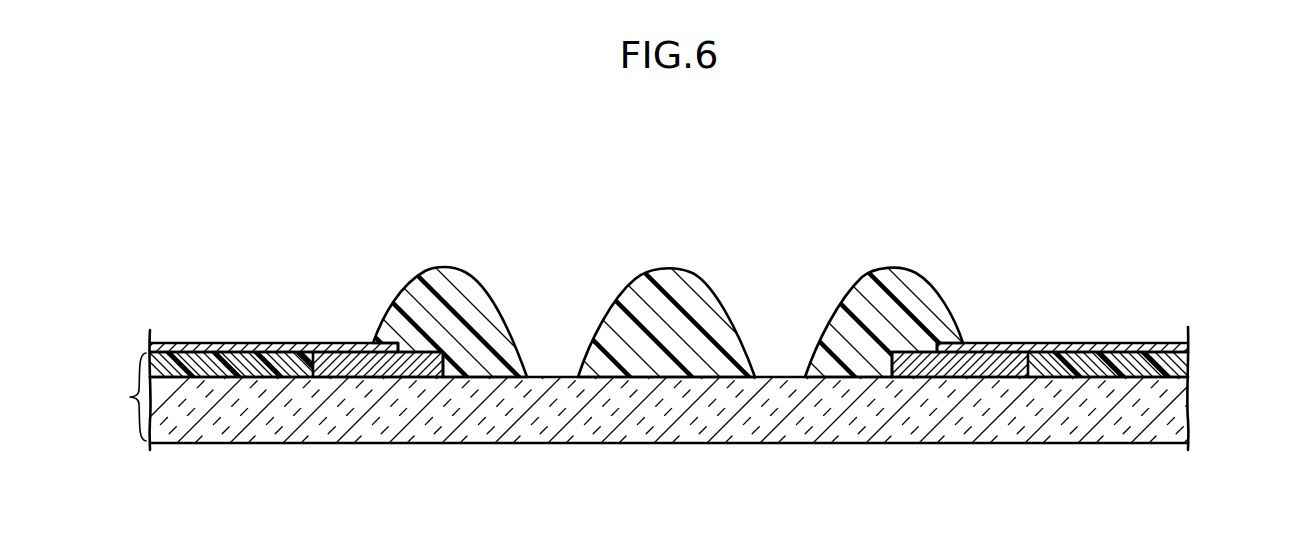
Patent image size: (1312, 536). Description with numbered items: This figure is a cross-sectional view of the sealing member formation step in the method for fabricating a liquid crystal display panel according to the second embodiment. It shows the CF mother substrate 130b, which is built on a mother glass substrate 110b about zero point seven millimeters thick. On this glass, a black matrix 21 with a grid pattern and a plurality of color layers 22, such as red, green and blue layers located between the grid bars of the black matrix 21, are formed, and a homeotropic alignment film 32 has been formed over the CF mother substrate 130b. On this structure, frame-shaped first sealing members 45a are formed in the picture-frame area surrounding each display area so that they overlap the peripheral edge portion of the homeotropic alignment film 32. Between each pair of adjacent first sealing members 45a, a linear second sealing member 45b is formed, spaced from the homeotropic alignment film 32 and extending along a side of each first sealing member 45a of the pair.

The mother glass substrate 110b is at (1170, 403).
The CF mother substrate 130b is at (102, 397).
The color layers 22 is at (198, 352).
The black matrix 21 is at (336, 362).
The homeotropic alignment film 32 is at (257, 349).
The first sealing members 45a is at (460, 282).
The second sealing members 45b is at (683, 279).